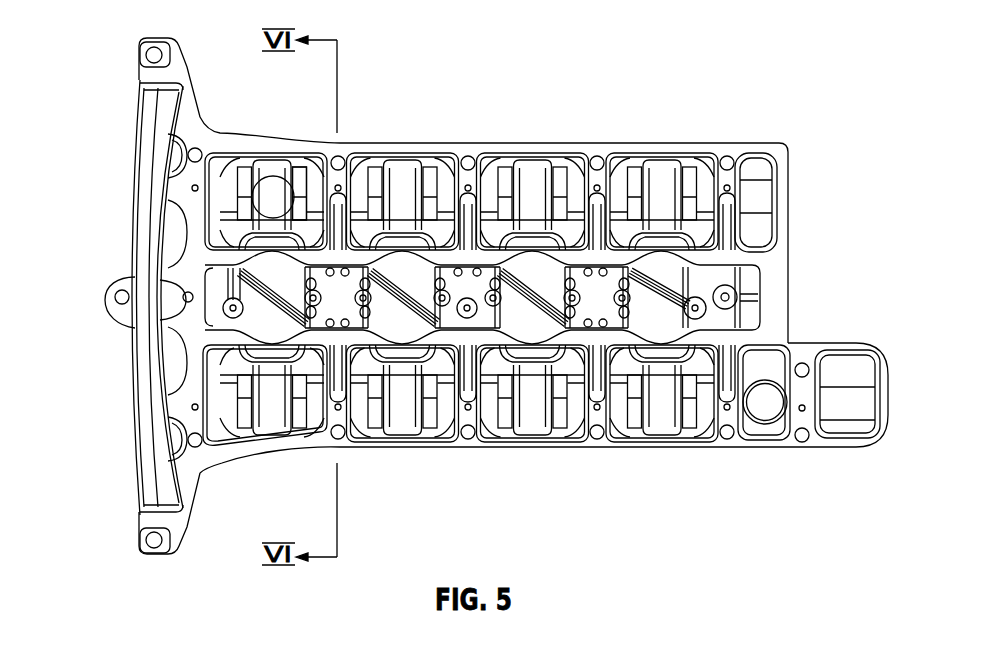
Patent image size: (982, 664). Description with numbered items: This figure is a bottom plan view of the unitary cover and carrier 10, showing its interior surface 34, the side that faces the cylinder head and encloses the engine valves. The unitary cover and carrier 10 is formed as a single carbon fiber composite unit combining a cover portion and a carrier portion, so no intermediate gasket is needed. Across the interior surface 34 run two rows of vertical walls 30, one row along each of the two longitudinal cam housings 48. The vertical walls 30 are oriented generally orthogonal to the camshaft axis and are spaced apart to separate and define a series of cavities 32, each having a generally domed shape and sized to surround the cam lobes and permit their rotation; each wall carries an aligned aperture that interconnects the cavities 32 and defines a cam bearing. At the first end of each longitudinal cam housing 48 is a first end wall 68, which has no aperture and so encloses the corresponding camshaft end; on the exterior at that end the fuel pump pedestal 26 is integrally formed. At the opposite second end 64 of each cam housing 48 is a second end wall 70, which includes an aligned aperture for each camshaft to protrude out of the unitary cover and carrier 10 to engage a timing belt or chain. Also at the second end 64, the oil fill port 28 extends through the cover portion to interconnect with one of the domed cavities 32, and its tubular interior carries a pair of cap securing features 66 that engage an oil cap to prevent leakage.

The unitary cover and carrier 10 is at (110, 52).
The fuel pump pedestal 26 is at (763, 392).
The oil fill port 28 is at (288, 170).
The vertical walls 30 is at (345, 210).
The cavities 32 is at (238, 187).
The interior surface 34 is at (790, 260).
The longitudinal cam housings 48 is at (802, 200).
The second end 64 is at (253, 117).
The cap securing features 66 is at (283, 197).
The first end wall 68 is at (780, 177).
The second end wall 70 is at (183, 220).